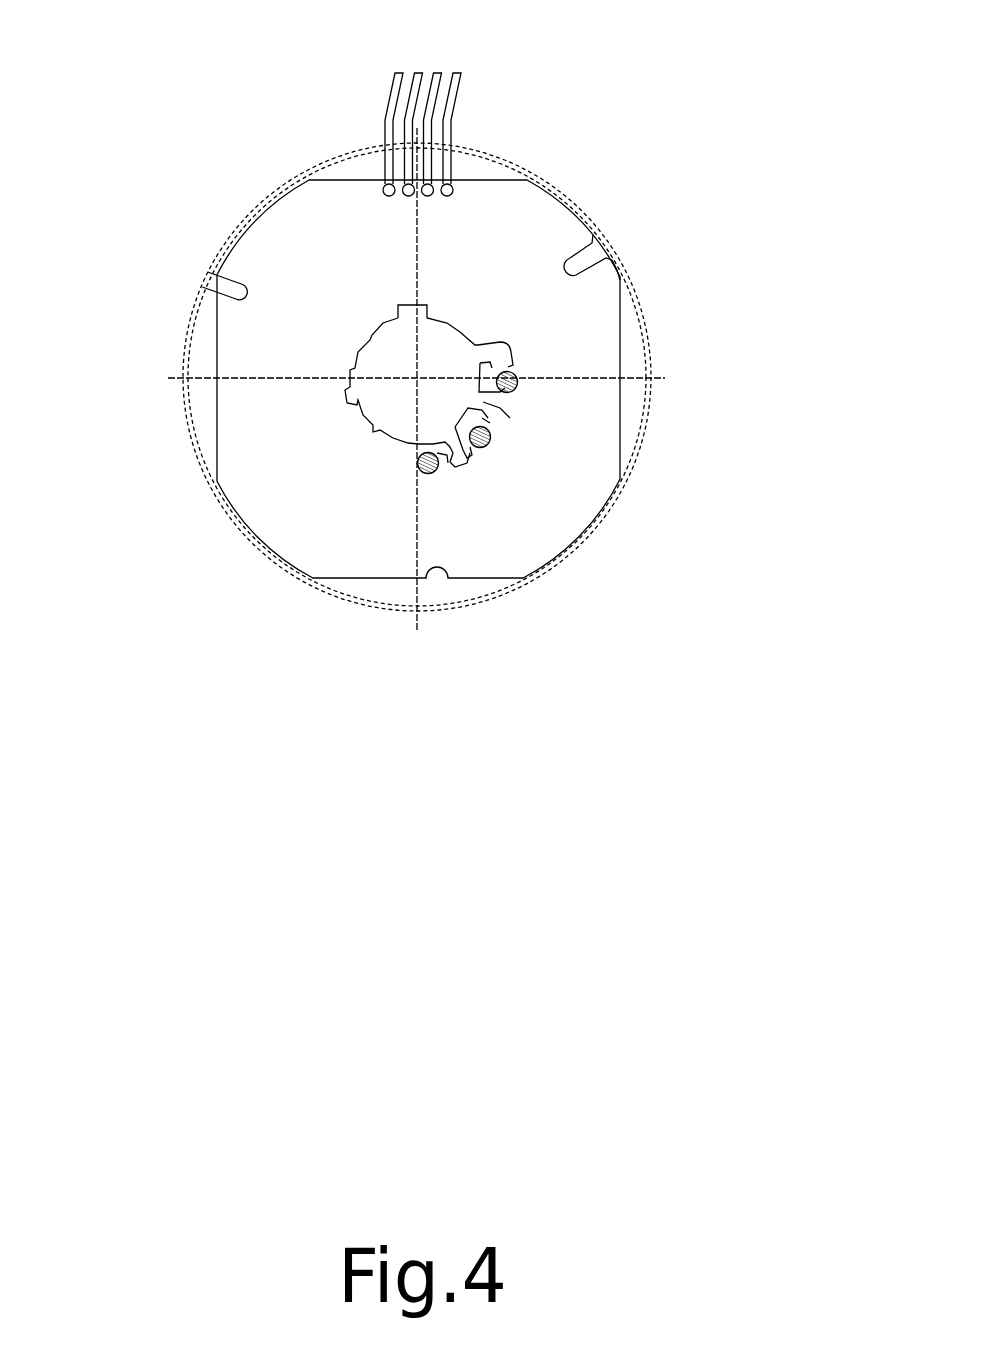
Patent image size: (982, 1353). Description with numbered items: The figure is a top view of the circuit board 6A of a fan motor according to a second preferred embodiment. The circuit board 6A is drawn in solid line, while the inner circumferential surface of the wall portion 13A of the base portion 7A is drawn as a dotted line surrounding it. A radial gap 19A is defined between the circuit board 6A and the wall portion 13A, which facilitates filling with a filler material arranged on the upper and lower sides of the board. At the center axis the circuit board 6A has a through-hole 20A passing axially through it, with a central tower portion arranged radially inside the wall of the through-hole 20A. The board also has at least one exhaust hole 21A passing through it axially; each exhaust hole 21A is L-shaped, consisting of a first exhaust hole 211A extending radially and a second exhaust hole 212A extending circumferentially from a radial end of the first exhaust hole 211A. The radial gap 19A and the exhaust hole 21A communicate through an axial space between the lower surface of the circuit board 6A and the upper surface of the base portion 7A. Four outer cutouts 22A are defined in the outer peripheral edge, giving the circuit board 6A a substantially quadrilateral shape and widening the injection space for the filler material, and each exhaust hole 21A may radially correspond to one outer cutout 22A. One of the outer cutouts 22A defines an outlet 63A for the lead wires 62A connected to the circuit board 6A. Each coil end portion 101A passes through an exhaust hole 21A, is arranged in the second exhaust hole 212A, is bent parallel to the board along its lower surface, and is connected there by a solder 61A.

The circuit board 6A is at (172, 210).
The base portion 7A is at (122, 632).
The wall portion 13A is at (293, 577).
The radial gap 19A is at (230, 293).
The through-hole 20A is at (438, 400).
The exhaust hole 21A is at (462, 452).
The outer cutouts 22A is at (632, 403).
The solder 61A is at (438, 465).
The lead wires 62A is at (392, 128).
The outlet 63A is at (475, 170).
The coil end portion 101A is at (450, 450).
The first exhaust hole 211A is at (507, 408).
The second exhaust hole 212A is at (497, 428).